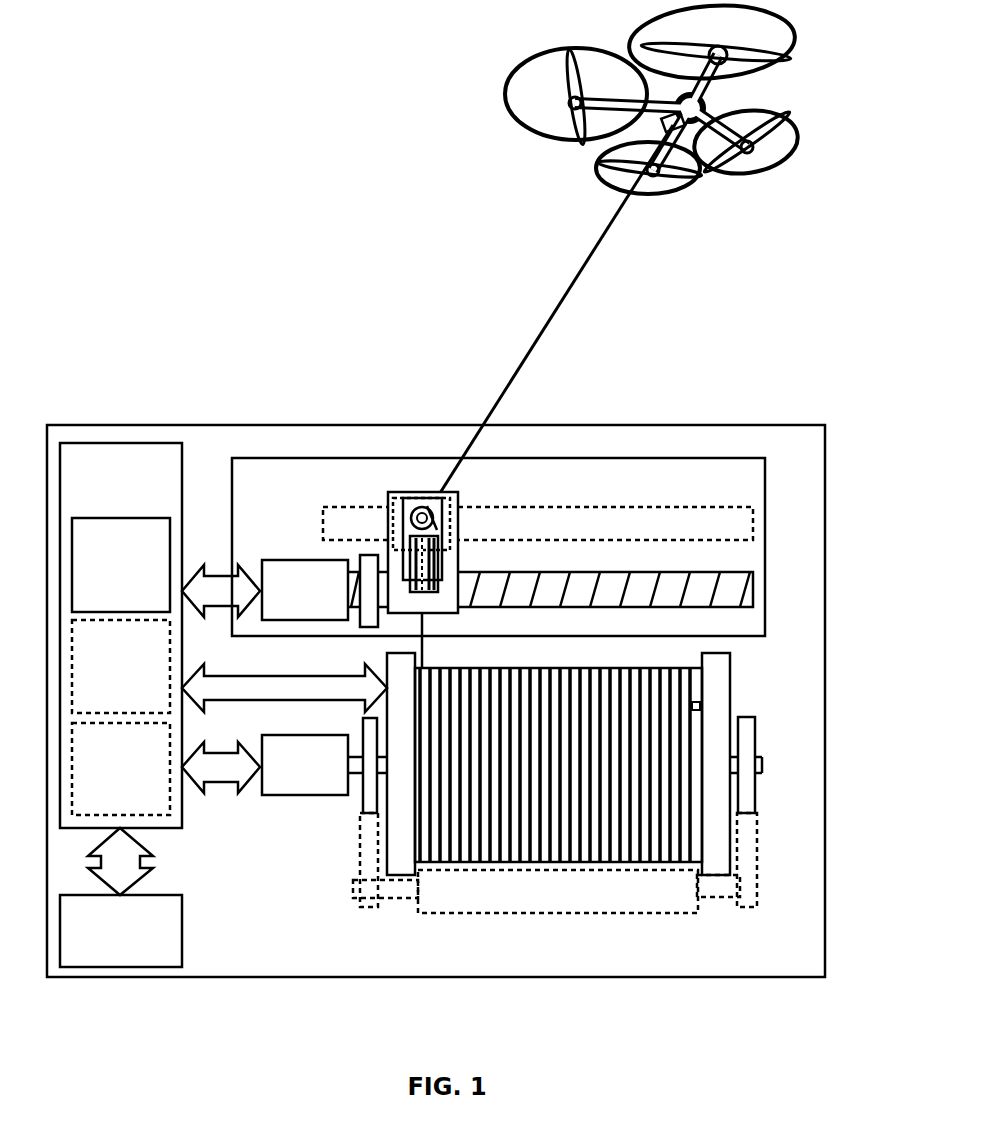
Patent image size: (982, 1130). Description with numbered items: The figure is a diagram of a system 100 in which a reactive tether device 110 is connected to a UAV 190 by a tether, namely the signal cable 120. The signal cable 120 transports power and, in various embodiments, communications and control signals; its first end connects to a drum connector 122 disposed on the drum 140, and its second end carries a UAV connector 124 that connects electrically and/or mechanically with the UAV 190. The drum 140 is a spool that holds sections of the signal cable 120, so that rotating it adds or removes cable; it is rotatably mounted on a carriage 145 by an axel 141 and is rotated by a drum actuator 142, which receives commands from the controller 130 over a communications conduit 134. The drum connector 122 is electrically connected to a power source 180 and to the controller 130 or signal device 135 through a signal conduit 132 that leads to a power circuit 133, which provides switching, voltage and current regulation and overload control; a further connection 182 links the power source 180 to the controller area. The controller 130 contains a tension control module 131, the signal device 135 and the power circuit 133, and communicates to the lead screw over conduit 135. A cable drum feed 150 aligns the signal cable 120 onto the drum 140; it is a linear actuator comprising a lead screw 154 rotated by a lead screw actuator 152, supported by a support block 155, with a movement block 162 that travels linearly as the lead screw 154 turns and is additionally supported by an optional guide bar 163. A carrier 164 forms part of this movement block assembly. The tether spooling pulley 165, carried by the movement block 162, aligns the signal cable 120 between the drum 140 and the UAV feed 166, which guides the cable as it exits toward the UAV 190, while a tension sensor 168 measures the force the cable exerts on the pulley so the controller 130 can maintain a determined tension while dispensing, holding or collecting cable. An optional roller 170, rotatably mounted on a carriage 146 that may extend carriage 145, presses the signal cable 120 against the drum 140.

The system 100 is at (116, 44).
The reactive tether device 110 is at (418, 969).
The signal cable 120 is at (527, 350).
The drum connector 122 is at (697, 707).
The UAV connector 124 is at (680, 130).
The controller 130 is at (102, 499).
The tension control module 131 is at (102, 601).
The signal conduit 132 is at (264, 698).
The power circuit 133 is at (102, 806).
The communications conduit 134 is at (202, 777).
The signal device 135 is at (240, 601).
The drum 140 is at (717, 860).
The axel 141 is at (762, 765).
The drum actuator 142 is at (286, 775).
The carriage 145 is at (362, 775).
The carriage 146 is at (752, 813).
The cable drum feed 150 is at (283, 458).
The lead screw actuator 152 is at (286, 600).
The lead screw 154 is at (608, 578).
The support block 155 is at (363, 555).
The movement block 162 is at (489, 470).
The guide bar 163 is at (521, 533).
The carrier 164 is at (412, 494).
The tether spooling pulley 165 is at (435, 578).
The UAV feed 166 is at (428, 500).
The tension sensor 168 is at (437, 528).
The roller 170 is at (516, 900).
The power source 180 is at (102, 951).
The power connection 182 is at (126, 843).
The UAV 190 is at (705, 110).